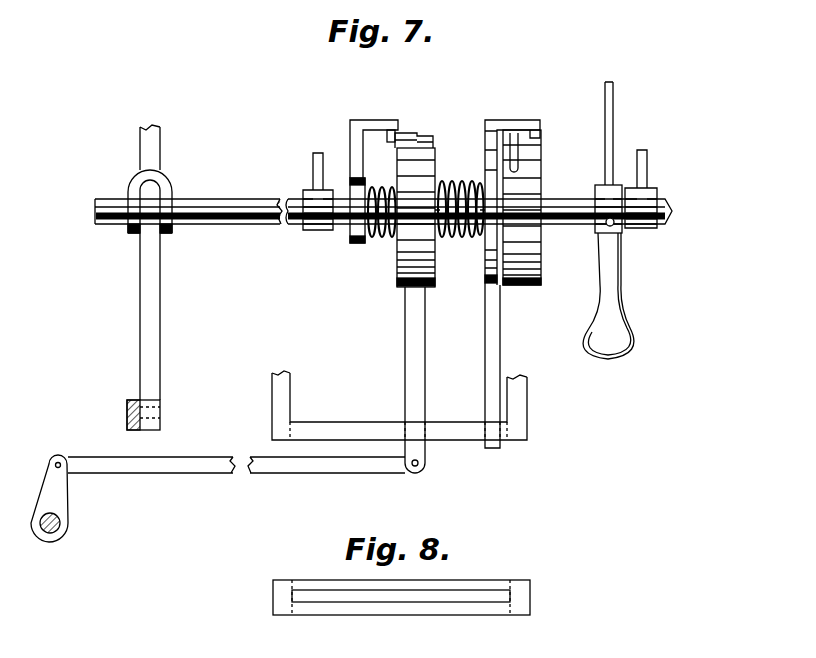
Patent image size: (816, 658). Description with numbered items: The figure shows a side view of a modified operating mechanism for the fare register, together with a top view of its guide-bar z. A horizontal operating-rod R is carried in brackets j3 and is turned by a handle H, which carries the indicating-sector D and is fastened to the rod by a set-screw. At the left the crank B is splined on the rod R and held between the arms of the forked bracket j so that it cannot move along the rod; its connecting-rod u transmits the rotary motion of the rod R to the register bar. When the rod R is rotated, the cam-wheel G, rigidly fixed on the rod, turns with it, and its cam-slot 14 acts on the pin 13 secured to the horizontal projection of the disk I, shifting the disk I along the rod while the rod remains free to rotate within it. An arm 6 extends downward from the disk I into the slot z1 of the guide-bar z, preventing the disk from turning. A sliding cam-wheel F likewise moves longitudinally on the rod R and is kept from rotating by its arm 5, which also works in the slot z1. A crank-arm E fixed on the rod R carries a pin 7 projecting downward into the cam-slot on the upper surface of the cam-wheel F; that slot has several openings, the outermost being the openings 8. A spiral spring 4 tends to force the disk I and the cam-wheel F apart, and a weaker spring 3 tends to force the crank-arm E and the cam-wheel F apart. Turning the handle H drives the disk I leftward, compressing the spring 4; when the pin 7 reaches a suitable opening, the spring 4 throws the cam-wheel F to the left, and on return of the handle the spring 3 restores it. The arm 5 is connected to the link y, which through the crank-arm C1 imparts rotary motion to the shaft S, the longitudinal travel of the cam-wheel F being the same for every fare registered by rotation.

In FIG. 7, the operating-rod R is at (215, 202).
In FIG. 7, the forked bracket j is at (153, 140).
In FIG. 7, the crank B is at (152, 310).
In FIG. 7, the connecting-rod u is at (127, 405).
In FIG. 7, the crank-arm C1 is at (68, 506).
In FIG. 7, the shaft S is at (58, 528).
In FIG. 7, the link y is at (198, 468).
In FIG. 7, the guide-bar z is at (340, 416).
In FIG. 8, the guide-bar z is at (340, 606).
In FIG. 8, the slot z1 is at (440, 598).
In FIG. 7, the arm 5 is at (410, 343).
In FIG. 7, the arm 6 is at (492, 340).
In FIG. 7, the sliding cam-wheel F is at (400, 272).
In FIG. 7, the cam-wheel G is at (515, 287).
In FIG. 7, the openings 8 is at (420, 133).
In FIG. 7, the disk I is at (484, 138).
In FIG. 7, the pin 13 is at (537, 125).
In FIG. 7, the cam-slot 14 is at (518, 168).
In FIG. 7, the spring 3 is at (380, 237).
In FIG. 7, the spiral spring 4 is at (463, 237).
In FIG. 7, the crank-arm E is at (358, 128).
In FIG. 7, the pin 7 is at (388, 137).
In FIG. 7, the brackets j3 is at (664, 155).
In FIG. 7, the indicating-sector D is at (613, 105).
In FIG. 7, the handle H is at (628, 326).